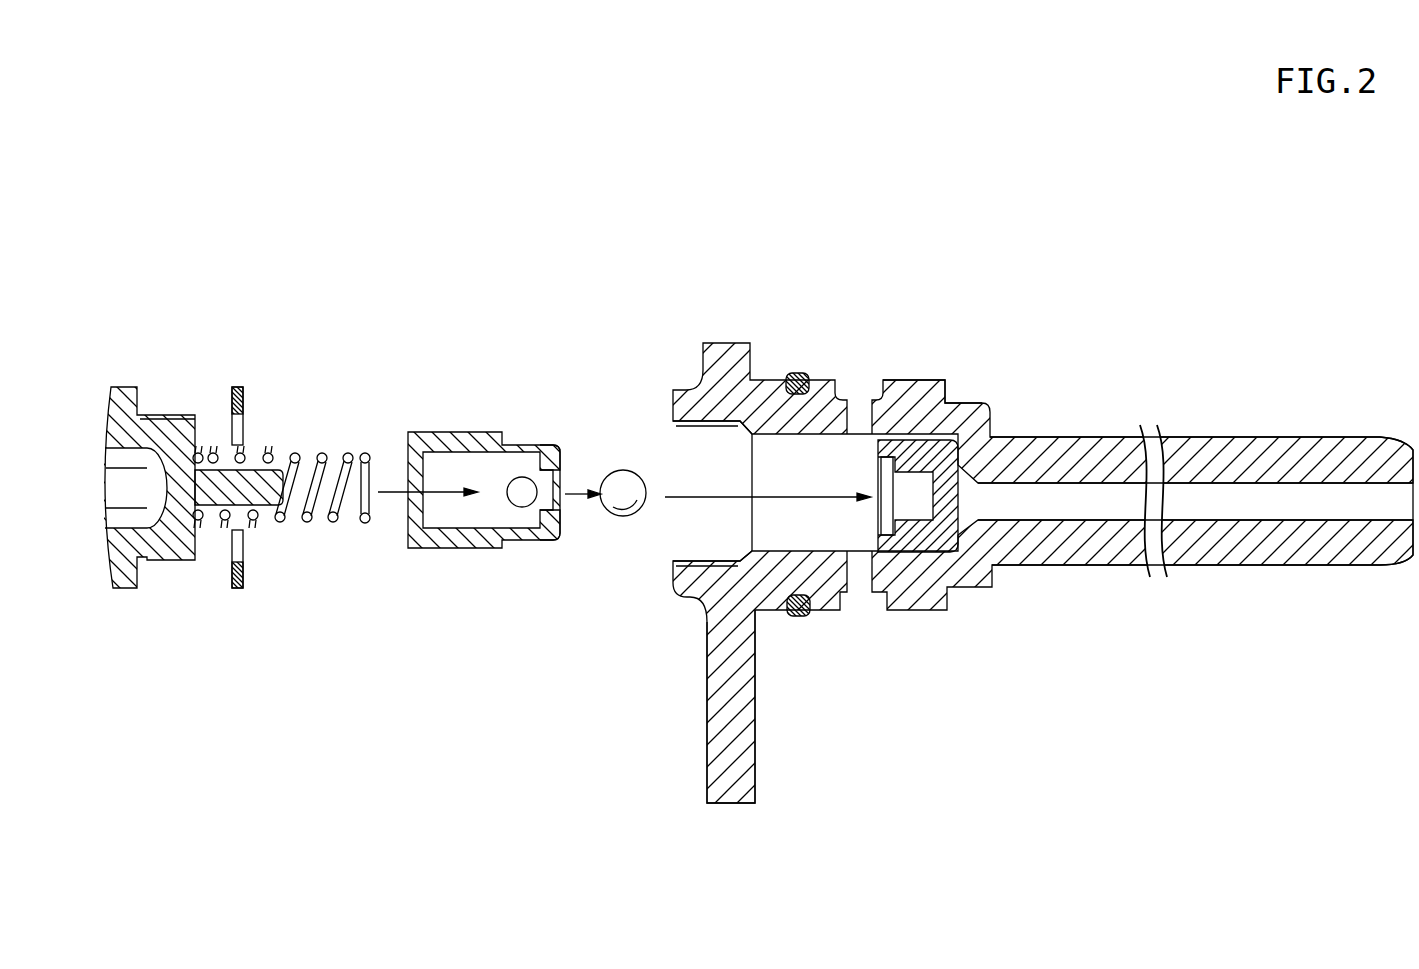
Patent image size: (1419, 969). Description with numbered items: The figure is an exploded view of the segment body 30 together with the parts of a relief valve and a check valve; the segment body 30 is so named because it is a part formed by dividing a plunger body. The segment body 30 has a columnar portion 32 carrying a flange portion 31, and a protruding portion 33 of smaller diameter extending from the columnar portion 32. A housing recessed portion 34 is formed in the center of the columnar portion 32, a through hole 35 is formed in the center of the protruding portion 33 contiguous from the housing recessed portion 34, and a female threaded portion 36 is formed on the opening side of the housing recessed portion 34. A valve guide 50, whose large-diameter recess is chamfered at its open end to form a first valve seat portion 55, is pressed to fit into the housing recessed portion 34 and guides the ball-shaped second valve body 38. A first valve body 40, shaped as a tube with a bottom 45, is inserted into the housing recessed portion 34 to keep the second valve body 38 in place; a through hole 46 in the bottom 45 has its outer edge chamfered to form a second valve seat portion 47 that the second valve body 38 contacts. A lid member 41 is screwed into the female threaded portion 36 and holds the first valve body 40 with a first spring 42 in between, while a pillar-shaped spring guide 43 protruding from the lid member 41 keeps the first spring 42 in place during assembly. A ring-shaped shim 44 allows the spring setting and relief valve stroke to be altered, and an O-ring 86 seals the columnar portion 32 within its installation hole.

The segment body 30 is at (1060, 415).
The flange portion 31 is at (725, 805).
The columnar portion 32 is at (908, 380).
The protruding portion 33 is at (1210, 567).
The housing recessed portion 34 is at (813, 553).
The through hole 35 is at (1261, 482).
The female threaded portion 36 is at (700, 562).
The second valve body 38 is at (623, 468).
The first valve body 40 is at (474, 432).
The lid member 41 is at (120, 387).
The first spring 42 is at (333, 522).
The spring guide 43 is at (272, 502).
The shim 44 is at (236, 387).
The bottom 45 is at (540, 462).
The through hole 46 is at (562, 505).
The second valve seat portion 47 is at (562, 468).
The valve guide 50 is at (920, 570).
The first valve seat portion 55 is at (880, 468).
The O-ring 86 is at (794, 373).